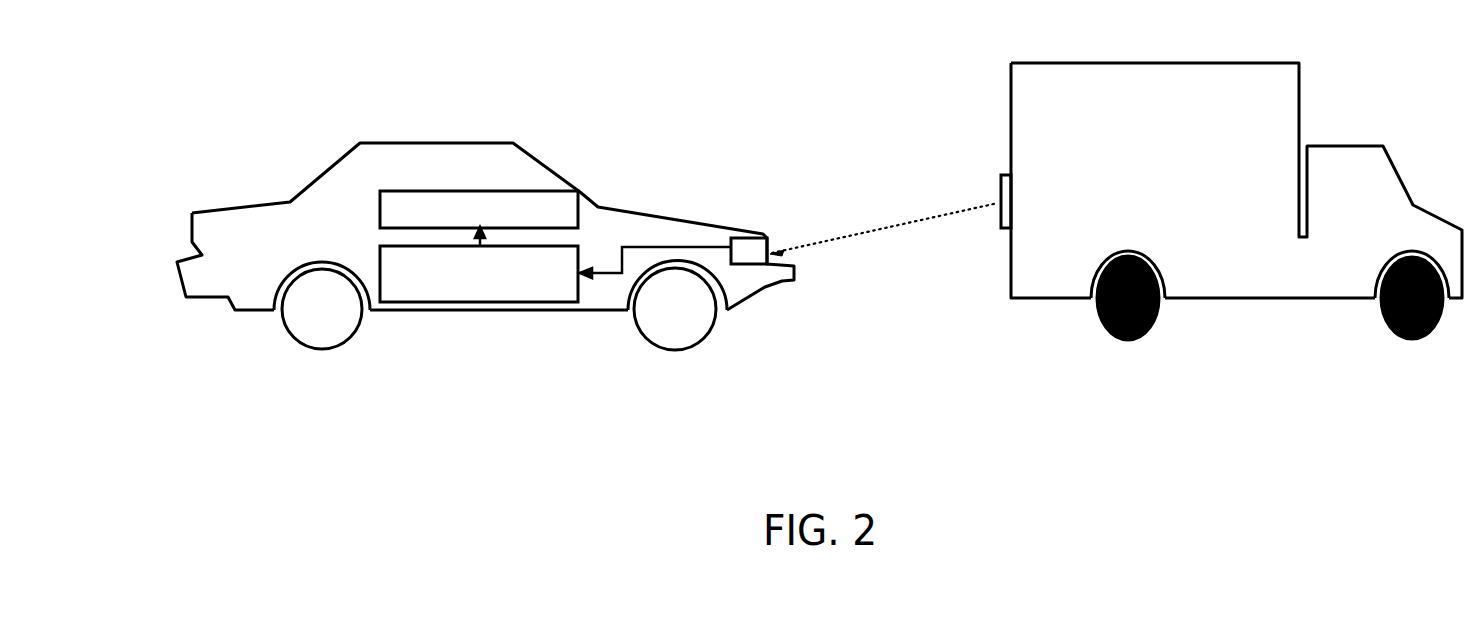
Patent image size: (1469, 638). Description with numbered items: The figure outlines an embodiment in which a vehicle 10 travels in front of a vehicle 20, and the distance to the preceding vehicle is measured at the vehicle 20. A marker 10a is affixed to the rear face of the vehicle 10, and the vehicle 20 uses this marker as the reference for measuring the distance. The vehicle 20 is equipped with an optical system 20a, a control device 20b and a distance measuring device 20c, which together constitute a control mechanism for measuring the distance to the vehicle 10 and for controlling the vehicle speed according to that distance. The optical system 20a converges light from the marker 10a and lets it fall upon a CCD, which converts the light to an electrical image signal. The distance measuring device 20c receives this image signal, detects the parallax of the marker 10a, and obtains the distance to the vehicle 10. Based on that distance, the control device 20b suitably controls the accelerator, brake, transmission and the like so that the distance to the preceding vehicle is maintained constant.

The vehicle 10 is at (1110, 65).
The marker 10a is at (1002, 175).
The vehicle 20 is at (388, 143).
The optical system 20a is at (740, 235).
The control device 20b is at (425, 190).
The distance measuring device 20c is at (425, 302).